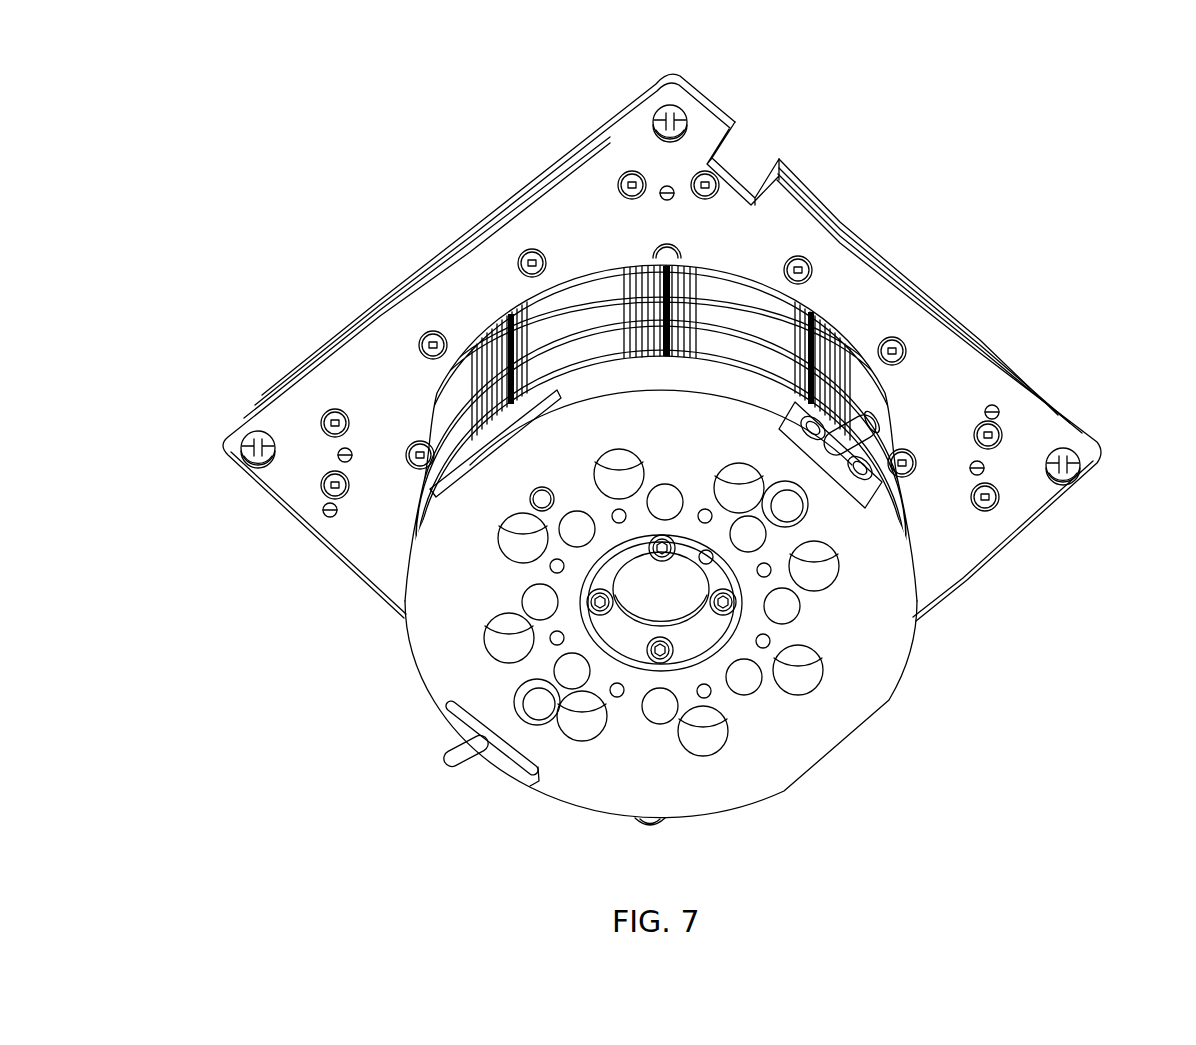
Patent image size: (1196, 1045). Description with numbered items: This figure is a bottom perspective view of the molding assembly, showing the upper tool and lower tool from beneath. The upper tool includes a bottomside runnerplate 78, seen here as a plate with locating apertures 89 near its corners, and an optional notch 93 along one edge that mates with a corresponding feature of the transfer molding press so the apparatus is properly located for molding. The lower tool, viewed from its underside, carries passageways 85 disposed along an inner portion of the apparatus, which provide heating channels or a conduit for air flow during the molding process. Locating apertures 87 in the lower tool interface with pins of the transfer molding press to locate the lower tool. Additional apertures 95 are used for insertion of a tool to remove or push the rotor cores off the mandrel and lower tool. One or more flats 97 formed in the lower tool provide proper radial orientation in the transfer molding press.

The bottomside runnerplate 78 is at (292, 493).
The passageways 85 is at (776, 643).
The locating apertures 87 is at (794, 503).
The locating apertures 89 is at (668, 106).
The notch 93 is at (751, 153).
The additional apertures 95 is at (620, 462).
The flats 97 is at (486, 447).